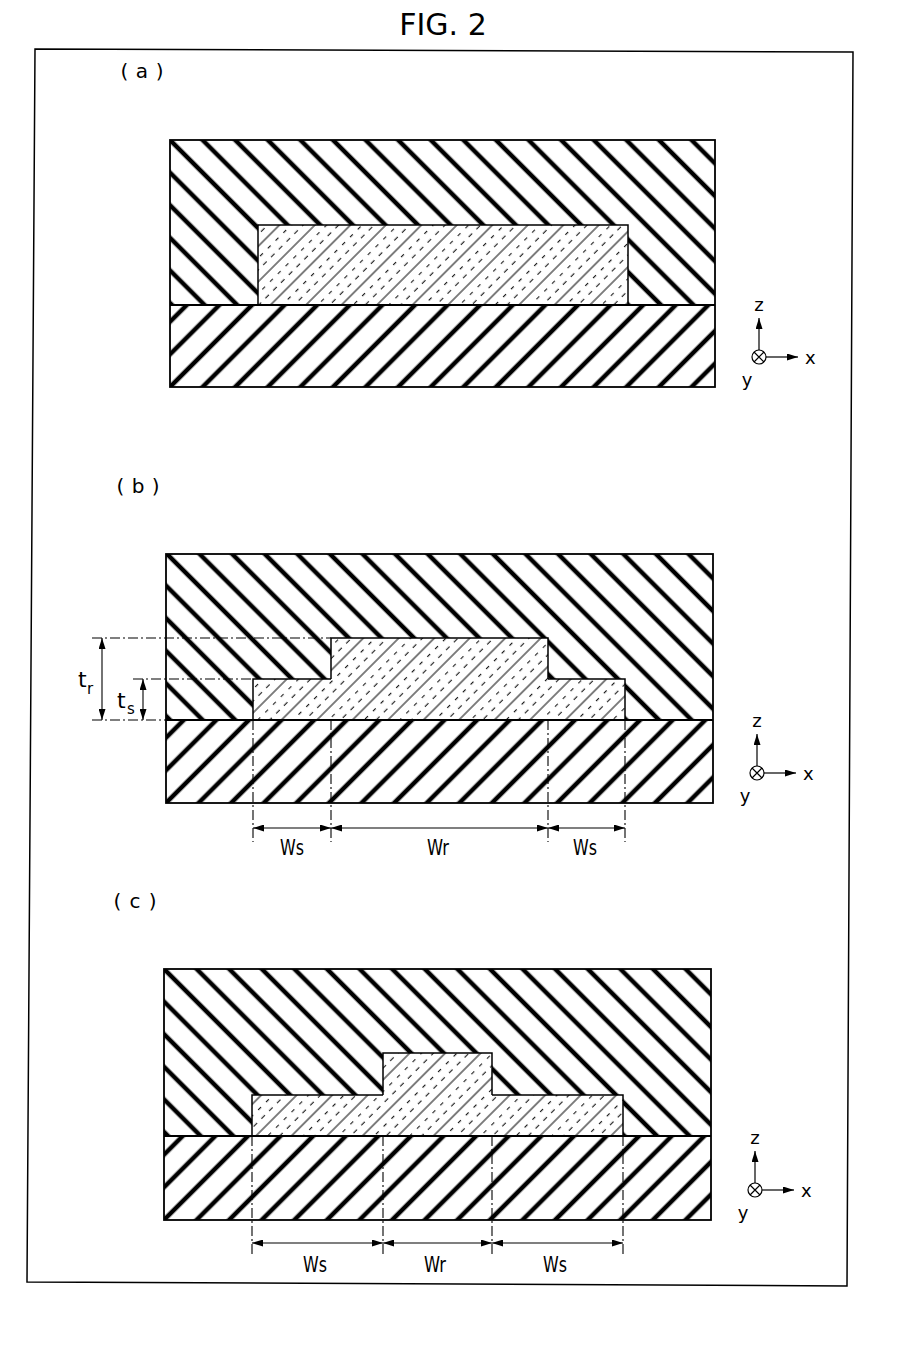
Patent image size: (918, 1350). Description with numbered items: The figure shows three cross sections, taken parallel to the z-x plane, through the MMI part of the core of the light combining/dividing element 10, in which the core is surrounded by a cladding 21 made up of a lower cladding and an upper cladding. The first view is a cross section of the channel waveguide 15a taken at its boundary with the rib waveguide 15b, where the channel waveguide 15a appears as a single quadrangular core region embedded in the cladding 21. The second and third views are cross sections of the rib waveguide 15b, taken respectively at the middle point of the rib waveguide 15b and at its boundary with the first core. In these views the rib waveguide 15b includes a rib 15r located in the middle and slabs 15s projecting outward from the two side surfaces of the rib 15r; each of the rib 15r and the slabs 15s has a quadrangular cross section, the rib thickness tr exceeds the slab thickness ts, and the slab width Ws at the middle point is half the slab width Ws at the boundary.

The light combining/dividing element 10 is at (683, 123).
The cladding 21 is at (717, 240).
The channel waveguide 15a is at (443, 240).
The rib waveguide 15b is at (598, 512).
The rib 15r is at (441, 652).
The slabs 15s is at (577, 692).